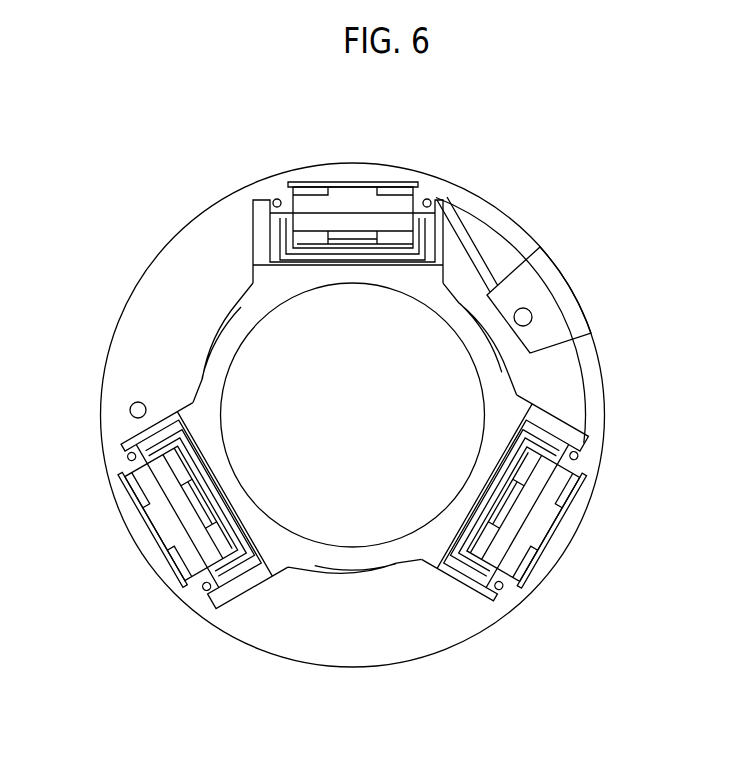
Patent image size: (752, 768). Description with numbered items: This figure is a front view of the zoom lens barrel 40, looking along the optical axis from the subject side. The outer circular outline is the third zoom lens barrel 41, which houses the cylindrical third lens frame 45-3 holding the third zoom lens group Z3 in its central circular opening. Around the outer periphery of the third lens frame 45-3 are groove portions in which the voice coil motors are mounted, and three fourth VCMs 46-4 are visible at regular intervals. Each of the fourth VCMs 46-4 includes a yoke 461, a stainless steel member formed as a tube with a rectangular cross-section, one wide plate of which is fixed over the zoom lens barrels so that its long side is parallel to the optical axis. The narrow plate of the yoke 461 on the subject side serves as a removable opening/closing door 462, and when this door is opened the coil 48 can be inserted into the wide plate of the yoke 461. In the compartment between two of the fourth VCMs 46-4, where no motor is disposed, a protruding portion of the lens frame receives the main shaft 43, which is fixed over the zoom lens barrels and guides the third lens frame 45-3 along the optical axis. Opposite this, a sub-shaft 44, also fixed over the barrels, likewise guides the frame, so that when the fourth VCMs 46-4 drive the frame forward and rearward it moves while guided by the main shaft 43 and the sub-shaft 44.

The zoom lens barrel 40 is at (612, 410).
The third zoom lens barrel 41 is at (187, 247).
The main shaft 43 is at (532, 318).
The sub-shaft 44 is at (131, 413).
The third lens frame 45-3 is at (430, 543).
The fourth VCM 46-4 is at (397, 203).
The yoke 461 is at (312, 188).
The opening/closing door 462 is at (353, 203).
The coil 48 is at (430, 200).
The third zoom lens group Z3 is at (357, 520).